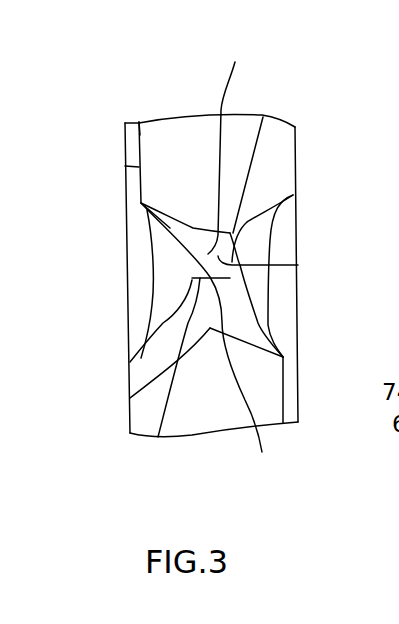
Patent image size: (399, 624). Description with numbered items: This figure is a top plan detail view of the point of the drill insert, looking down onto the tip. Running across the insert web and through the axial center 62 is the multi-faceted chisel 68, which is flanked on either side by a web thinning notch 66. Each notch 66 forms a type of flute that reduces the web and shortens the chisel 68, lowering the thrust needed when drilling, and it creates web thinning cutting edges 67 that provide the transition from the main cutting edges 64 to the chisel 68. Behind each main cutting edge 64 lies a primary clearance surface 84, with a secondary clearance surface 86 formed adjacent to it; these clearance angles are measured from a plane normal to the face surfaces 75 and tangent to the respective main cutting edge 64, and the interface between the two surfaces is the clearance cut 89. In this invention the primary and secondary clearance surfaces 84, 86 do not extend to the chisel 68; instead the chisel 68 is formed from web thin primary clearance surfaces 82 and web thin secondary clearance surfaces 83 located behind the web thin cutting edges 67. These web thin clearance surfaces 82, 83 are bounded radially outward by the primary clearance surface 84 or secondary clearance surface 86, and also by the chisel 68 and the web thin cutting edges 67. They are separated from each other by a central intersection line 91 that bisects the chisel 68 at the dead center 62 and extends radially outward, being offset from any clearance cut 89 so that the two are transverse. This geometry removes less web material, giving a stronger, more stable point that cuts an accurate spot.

The axial center 62 is at (152, 244).
The main cutting edge 64 is at (139, 166).
The web thinning notch 66 is at (170, 300).
The web thinning cutting edge 67 is at (177, 270).
The chisel 68 is at (192, 303).
The face surface 75 is at (125, 137).
The web thin primary clearance surface 82 is at (141, 203).
The web thin secondary clearance surface 83 is at (298, 265).
The primary clearance surface 84 is at (183, 136).
The secondary clearance surface 86 is at (277, 137).
The clearance cut 89 is at (253, 170).
The central intersection line 91 is at (212, 265).